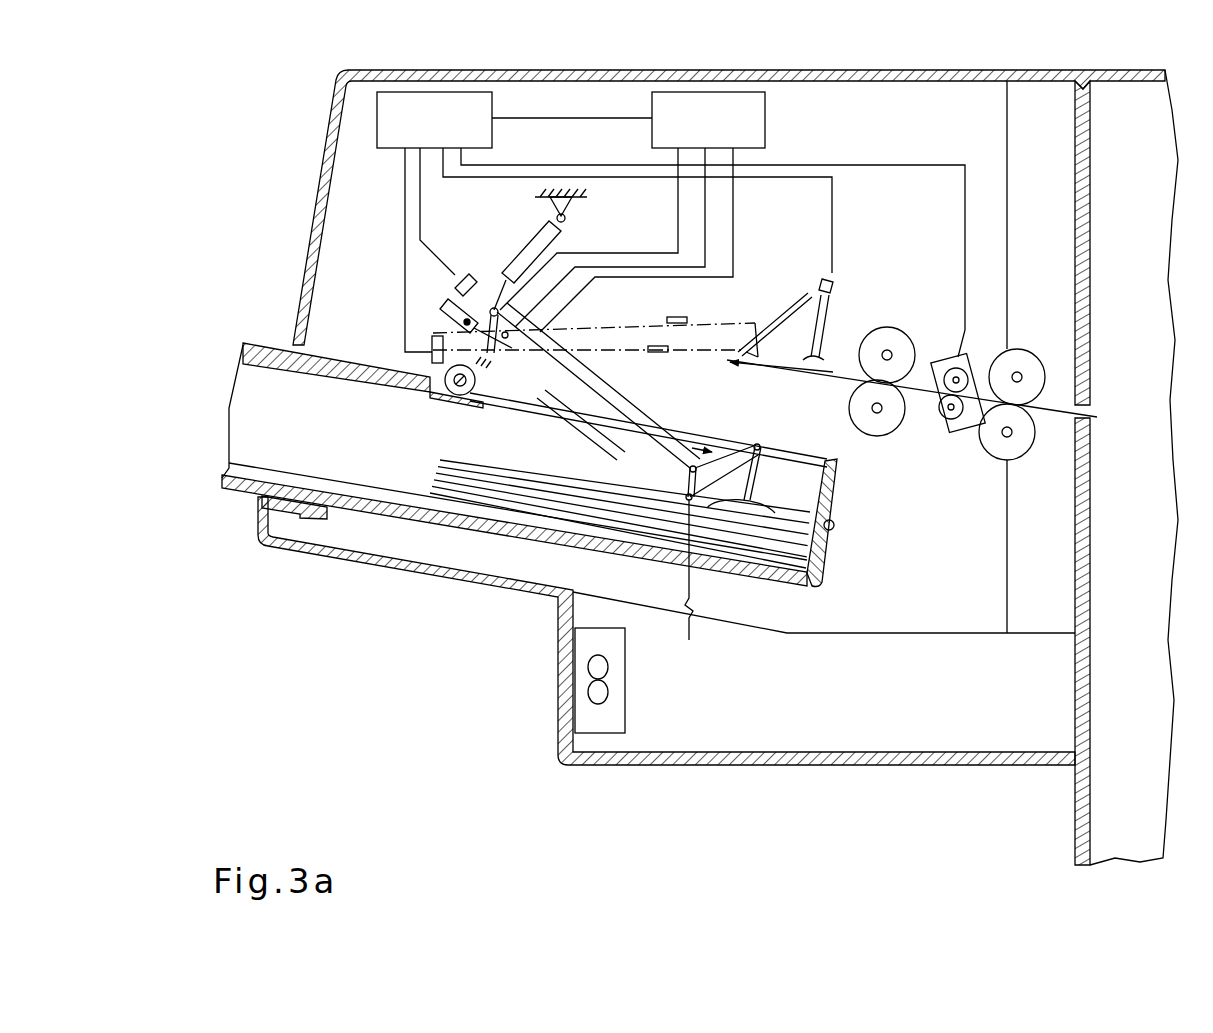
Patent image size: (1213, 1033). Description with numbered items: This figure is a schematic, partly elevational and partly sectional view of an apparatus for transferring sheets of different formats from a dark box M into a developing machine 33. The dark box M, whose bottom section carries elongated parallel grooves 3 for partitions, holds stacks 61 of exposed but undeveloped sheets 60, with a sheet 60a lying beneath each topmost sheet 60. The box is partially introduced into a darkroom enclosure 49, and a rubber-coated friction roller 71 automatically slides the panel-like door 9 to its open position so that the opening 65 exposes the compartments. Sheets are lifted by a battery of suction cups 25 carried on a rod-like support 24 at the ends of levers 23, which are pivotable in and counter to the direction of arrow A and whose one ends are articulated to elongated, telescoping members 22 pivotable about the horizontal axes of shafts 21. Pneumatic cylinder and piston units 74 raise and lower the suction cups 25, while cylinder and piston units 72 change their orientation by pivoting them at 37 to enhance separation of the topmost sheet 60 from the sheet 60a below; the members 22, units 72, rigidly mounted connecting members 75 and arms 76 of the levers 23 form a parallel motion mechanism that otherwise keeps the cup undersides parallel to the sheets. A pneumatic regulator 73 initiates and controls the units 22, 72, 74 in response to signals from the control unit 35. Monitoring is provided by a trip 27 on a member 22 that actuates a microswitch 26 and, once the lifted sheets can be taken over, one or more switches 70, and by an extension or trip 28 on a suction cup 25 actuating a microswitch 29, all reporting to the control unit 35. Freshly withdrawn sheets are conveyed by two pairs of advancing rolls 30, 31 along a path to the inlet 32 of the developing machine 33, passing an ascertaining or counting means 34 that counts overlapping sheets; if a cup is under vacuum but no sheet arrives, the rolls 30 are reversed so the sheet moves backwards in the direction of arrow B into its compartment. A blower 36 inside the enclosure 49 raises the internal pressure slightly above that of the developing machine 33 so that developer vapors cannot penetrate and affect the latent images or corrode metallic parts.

The enclosure 49 is at (828, 70).
The developing machine 33 is at (1148, 138).
The control unit 35 is at (446, 131).
The pneumatic regulator 73 is at (713, 131).
The pneumatic cylinder and piston units 74 is at (558, 245).
The shafts 21 is at (488, 308).
The microswitch 26 is at (463, 274).
The trip 27 is at (457, 320).
The switches 70 is at (430, 345).
The cylinder and piston units 72 is at (608, 398).
The elongated members 22 is at (612, 445).
The connecting members 75 is at (498, 345).
The arms 76 is at (685, 481).
The lever 23 is at (743, 445).
The extension or trip 28 is at (808, 290).
The microswitch 29 is at (835, 280).
The suction cups 25 is at (840, 335).
The rod-like support 24 is at (752, 483).
The arrow A is at (720, 462).
The arrow B is at (781, 380).
The opening 65 is at (826, 455).
The pair of advancing rolls 30 is at (892, 434).
The pair of advancing rolls 31 is at (990, 458).
The ascertaining or counting means 34 is at (948, 356).
The inlet 32 is at (1095, 410).
The sheet 60a is at (1057, 408).
The sheets 60 is at (437, 461).
The stacks 61 is at (416, 470).
The friction roller 71 is at (460, 395).
The door 9 is at (237, 380).
The grooves 3 is at (258, 474).
The pivot 37 is at (683, 585).
The blowers 36 is at (612, 718).
The dark box M is at (228, 508).